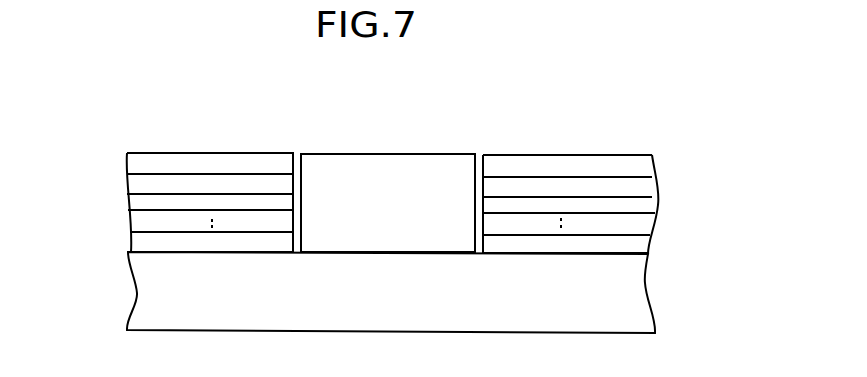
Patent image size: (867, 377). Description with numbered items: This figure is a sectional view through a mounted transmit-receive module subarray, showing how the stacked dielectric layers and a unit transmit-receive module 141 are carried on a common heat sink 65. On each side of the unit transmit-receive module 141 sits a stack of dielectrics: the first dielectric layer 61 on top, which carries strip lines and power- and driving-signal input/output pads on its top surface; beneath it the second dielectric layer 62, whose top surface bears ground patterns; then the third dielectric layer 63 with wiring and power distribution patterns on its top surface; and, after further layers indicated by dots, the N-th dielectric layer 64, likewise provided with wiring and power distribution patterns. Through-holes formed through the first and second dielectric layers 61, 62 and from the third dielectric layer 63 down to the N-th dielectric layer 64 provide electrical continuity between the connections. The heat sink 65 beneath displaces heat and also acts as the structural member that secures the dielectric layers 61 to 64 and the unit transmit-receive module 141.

The first dielectric layer 61 is at (126, 163).
The second dielectric layer 62 is at (127, 185).
The third dielectric layer 63 is at (125, 203).
The N-th dielectric layer 64 is at (128, 238).
The heat sink 65 is at (653, 308).
The unit transmit-receive module 141 is at (355, 153).